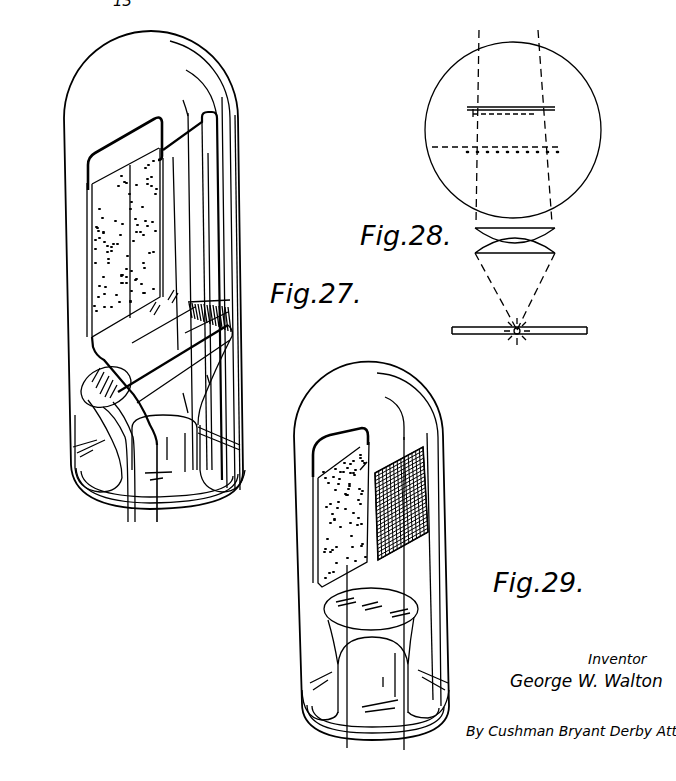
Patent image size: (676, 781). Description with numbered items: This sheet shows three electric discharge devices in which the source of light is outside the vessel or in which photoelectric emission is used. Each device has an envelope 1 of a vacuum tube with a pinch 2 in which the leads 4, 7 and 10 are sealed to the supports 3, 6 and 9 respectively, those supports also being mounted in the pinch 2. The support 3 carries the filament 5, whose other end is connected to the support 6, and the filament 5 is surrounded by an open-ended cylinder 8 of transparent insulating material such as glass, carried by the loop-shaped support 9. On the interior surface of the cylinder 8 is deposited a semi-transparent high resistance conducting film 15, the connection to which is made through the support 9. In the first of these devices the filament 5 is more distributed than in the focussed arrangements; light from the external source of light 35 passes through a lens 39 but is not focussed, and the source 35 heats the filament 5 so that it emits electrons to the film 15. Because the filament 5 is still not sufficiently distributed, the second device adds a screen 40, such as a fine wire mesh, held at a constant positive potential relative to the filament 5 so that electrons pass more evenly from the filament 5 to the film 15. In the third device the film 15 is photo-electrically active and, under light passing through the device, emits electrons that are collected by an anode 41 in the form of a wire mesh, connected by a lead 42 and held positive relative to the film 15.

In FIG. 27, the envelope 1 is at (73, 317).
In FIG. 28, the envelope 1 is at (593, 167).
In FIG. 29, the envelope 1 is at (303, 615).
In FIG. 27, the pinch 2 is at (110, 403).
In FIG. 29, the pinch 2 is at (330, 628).
In FIG. 27, the support 3 is at (212, 127).
In FIG. 27, the lead 4 is at (157, 517).
In FIG. 27, the filament 5 is at (212, 248).
In FIG. 28, the filament 5 is at (483, 155).
In FIG. 27, the support 6 is at (187, 348).
In FIG. 27, the lead 7 is at (126, 514).
In FIG. 27, the cylinder 8 is at (88, 226).
In FIG. 28, the cylinder 8 is at (545, 105).
In FIG. 29, the cylinder 8 is at (313, 522).
In FIG. 27, the support 9 is at (120, 146).
In FIG. 28, the support 9 is at (547, 111).
In FIG. 29, the support 9 is at (320, 581).
In FIG. 27, the lead 10 is at (135, 519).
In FIG. 29, the lead 10 is at (348, 746).
In FIG. 27, the high resistance conducting film 15 is at (102, 255).
In FIG. 28, the high resistance conducting film 15 is at (533, 115).
In FIG. 29, the high resistance conducting film 15 is at (360, 463).
In FIG. 28, the external source of light 35 is at (520, 328).
In FIG. 28, the lens 39 is at (555, 240).
In FIG. 28, the screen 40 is at (547, 142).
In FIG. 29, the anode 41 is at (420, 510).
In FIG. 29, the lead 42 is at (406, 741).